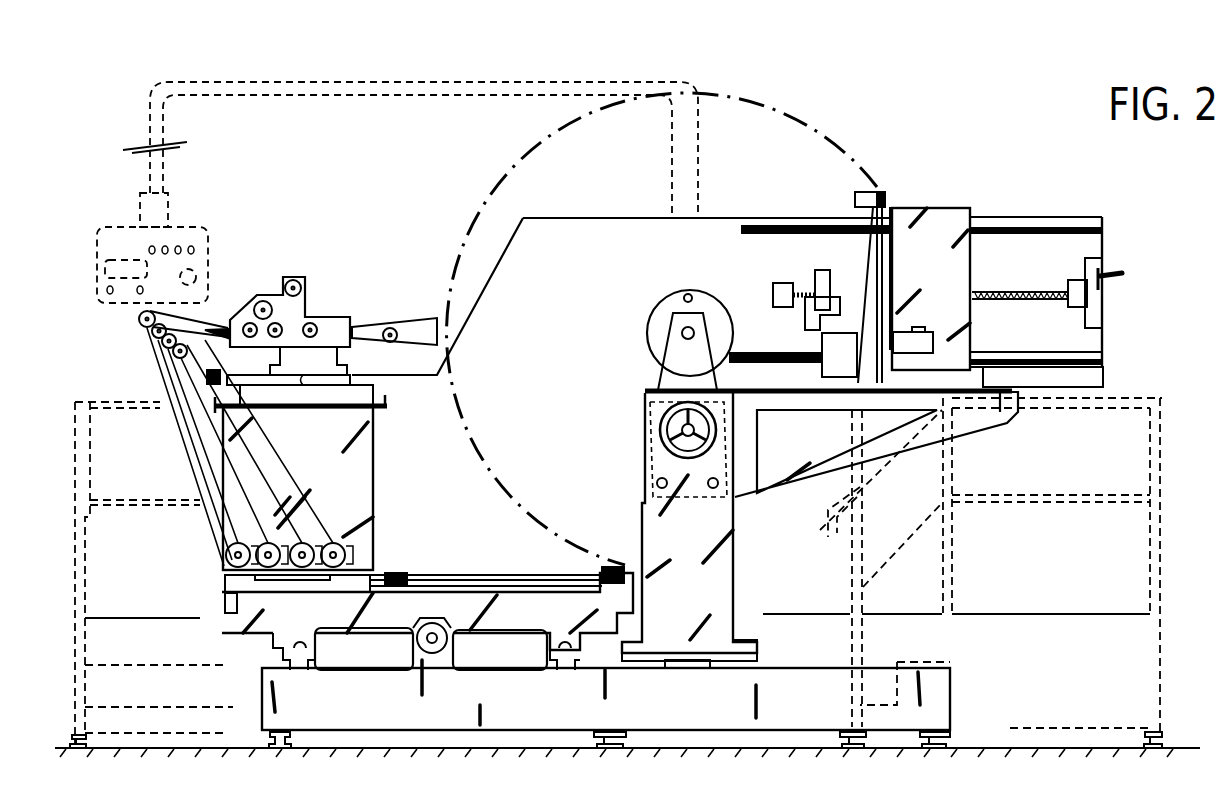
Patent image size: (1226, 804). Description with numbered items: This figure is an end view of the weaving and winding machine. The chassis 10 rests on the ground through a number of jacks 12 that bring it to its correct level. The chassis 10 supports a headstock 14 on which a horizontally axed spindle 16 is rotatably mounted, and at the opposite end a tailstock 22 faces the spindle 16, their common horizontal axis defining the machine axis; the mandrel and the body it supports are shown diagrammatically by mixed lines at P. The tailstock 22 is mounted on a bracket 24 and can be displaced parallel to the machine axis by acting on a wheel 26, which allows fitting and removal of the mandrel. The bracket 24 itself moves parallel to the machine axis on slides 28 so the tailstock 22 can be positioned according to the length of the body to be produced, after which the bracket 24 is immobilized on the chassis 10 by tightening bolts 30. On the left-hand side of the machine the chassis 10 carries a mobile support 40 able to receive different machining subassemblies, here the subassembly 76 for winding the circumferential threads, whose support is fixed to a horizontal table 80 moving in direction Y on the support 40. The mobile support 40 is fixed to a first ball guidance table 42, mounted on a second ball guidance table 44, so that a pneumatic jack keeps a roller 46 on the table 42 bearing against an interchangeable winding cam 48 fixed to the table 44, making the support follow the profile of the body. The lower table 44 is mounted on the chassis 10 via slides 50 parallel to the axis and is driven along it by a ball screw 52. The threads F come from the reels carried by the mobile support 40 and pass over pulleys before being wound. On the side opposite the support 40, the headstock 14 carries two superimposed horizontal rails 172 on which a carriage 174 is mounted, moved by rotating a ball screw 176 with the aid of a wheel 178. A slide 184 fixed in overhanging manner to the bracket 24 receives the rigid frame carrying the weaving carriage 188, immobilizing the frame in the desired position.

The chassis 10 is at (937, 685).
The jacks 12 is at (947, 740).
The headstock 14 is at (522, 240).
The spindle 16 is at (650, 313).
The tailstock 22 is at (678, 360).
The bracket 24 is at (695, 530).
The wheel 26 is at (661, 415).
The slides 28 is at (745, 658).
The bolts 30 is at (745, 642).
The mobile support 40 is at (363, 458).
The first ball guidance table 42 is at (222, 578).
The second ball guidance table 44 is at (227, 617).
The roller 46 is at (397, 578).
The cam 48 is at (512, 577).
The slides 50 is at (275, 645).
The ball screw 52 is at (425, 640).
The winding subassembly 76 is at (293, 272).
The horizontal table 80 is at (303, 386).
The horizontal rails 172 is at (1040, 227).
The carriage 174 is at (947, 220).
The ball screw 176 is at (1048, 290).
The wheel 178 is at (1108, 315).
The slide 184 is at (1017, 378).
The weaving carriage 188 is at (810, 317).
The mandrel and body P is at (521, 167).
The threads F is at (203, 448).